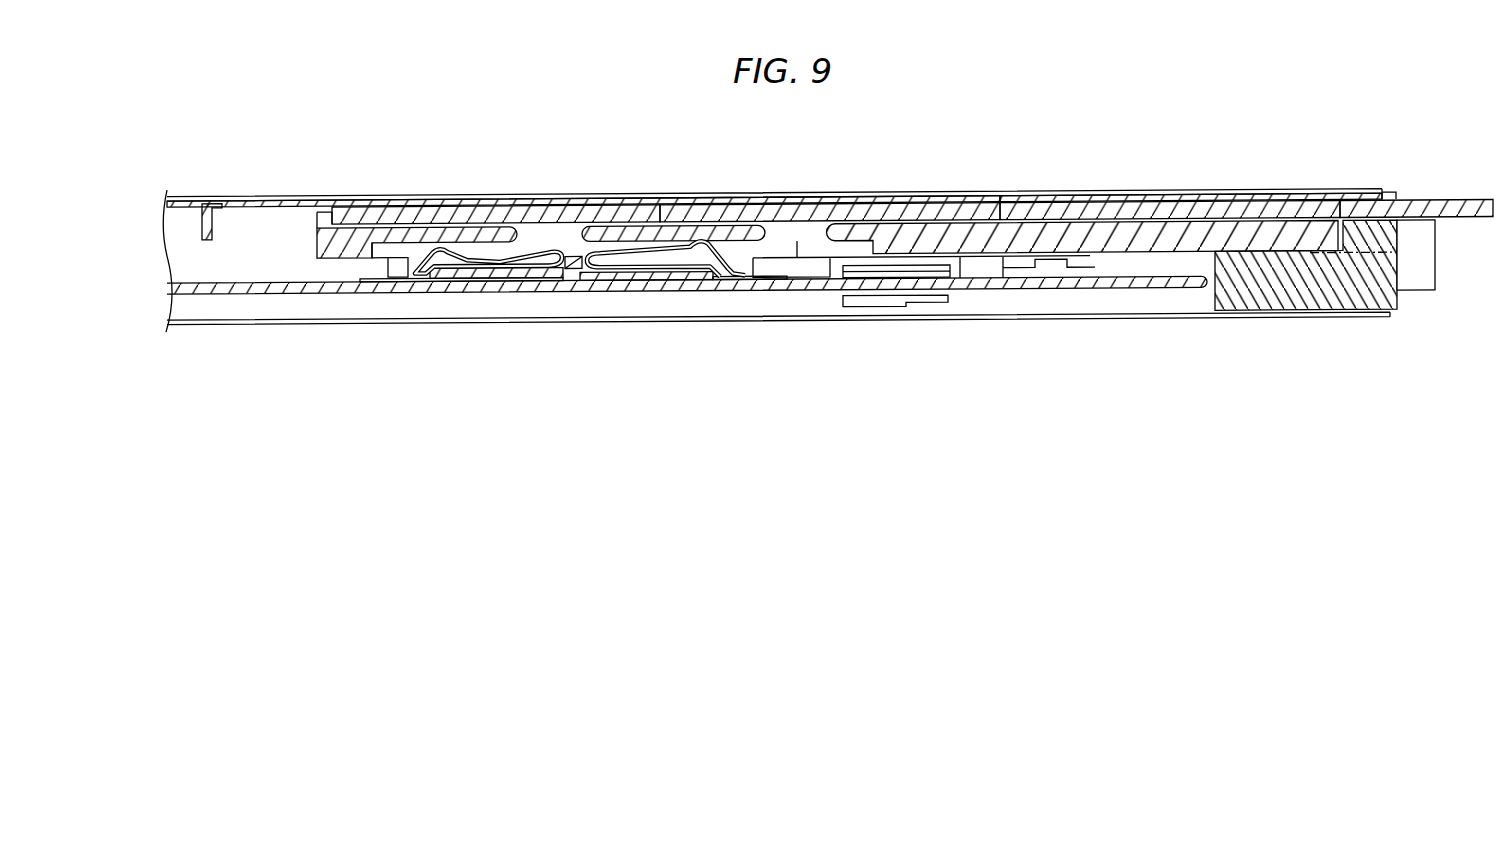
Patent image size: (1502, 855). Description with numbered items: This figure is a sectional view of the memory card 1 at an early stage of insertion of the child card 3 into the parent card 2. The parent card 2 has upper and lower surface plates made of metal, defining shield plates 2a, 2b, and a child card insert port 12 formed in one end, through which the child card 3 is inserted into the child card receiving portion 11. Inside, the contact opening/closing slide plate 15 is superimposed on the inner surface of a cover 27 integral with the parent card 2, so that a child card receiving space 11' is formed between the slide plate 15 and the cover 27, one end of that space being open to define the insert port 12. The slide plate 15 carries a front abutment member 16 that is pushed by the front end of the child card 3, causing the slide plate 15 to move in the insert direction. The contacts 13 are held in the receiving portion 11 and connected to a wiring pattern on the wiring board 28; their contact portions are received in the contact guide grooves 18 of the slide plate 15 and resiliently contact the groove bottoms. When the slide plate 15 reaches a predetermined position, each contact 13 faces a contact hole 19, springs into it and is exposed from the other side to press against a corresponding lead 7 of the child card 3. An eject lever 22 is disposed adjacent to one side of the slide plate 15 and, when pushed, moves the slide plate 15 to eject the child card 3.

The memory card 1 is at (1264, 187).
The parent card 2 is at (1092, 198).
The shield plate 2a is at (901, 200).
The shield plate 2b is at (902, 324).
The child card 3 is at (1176, 211).
The leads 7 is at (551, 205).
The child card receiving portion 11 is at (830, 176).
The child card receiving space 11' is at (496, 177).
The child card insert port 12 is at (1392, 196).
The contacts 13 is at (442, 293).
The contact opening/closing slide plate 15 is at (1002, 282).
The front abutment member 16 is at (322, 208).
The contact guide grooves 18 is at (397, 294).
The contact hole 19 is at (568, 238).
The eject lever 22 is at (1418, 275).
The cover 27 is at (981, 233).
The wiring board 28 is at (1068, 292).